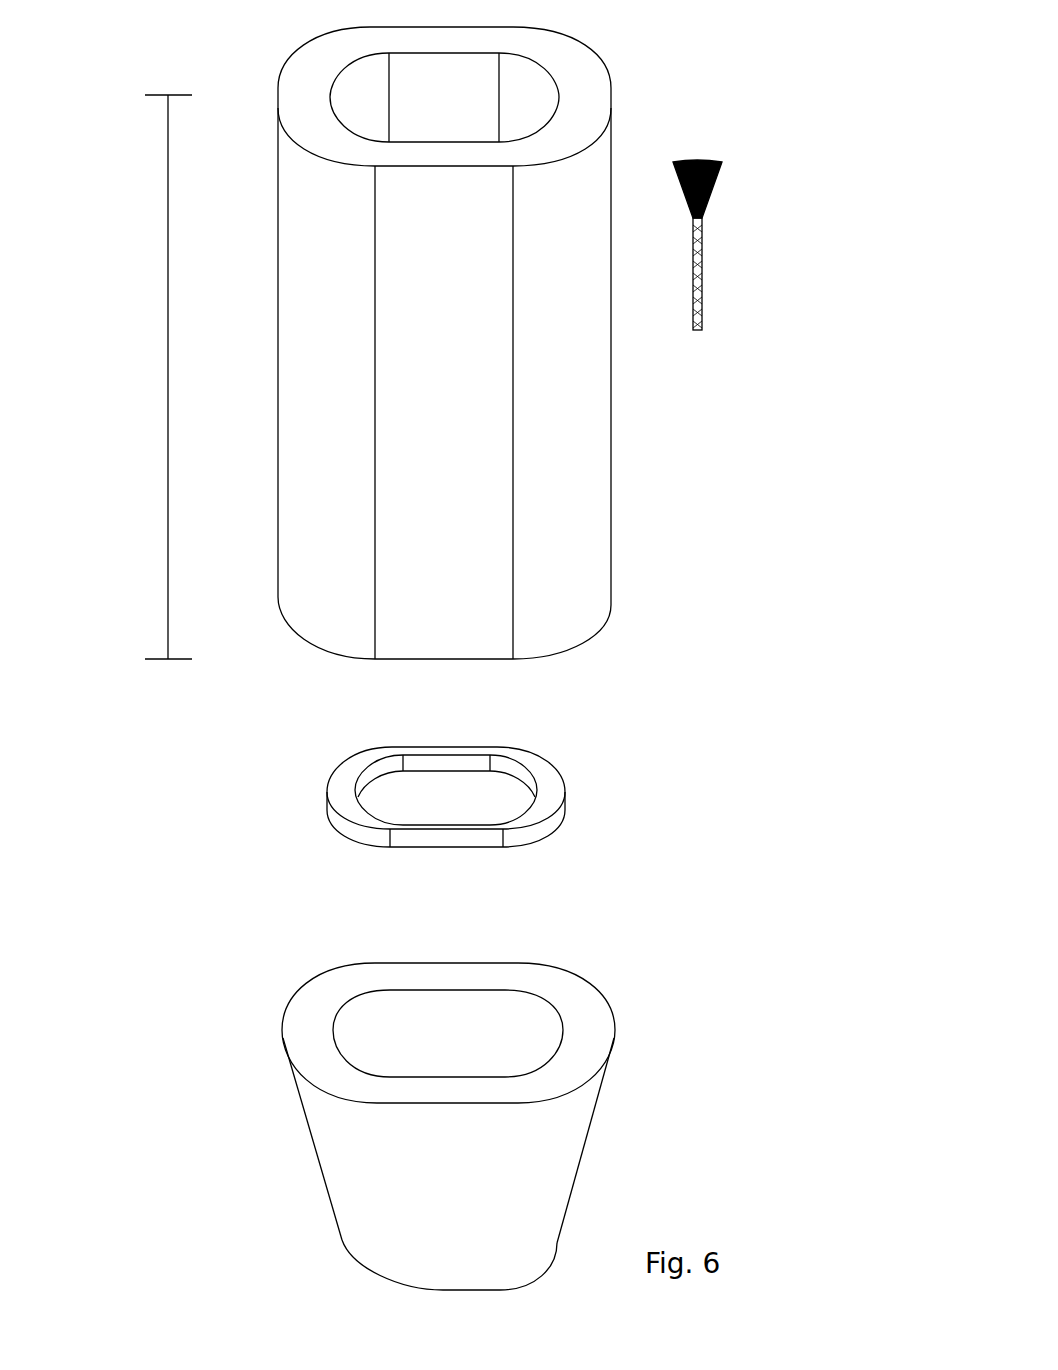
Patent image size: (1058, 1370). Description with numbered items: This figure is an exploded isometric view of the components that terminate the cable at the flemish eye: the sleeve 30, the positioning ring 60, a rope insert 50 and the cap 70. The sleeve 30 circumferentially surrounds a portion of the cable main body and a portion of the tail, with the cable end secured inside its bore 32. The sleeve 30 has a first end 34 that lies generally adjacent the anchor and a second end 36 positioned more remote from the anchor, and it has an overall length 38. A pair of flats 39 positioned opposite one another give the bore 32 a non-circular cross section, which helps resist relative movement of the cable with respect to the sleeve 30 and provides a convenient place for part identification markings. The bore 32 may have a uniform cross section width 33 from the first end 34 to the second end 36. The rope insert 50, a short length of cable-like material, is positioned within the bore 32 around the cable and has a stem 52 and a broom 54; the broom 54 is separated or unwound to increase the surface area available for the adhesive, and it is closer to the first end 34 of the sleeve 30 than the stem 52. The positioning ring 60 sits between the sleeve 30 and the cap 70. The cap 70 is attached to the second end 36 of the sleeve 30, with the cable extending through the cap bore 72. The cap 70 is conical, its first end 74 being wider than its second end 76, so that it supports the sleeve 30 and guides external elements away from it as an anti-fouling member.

The sleeve 30 is at (457, 330).
The bore 32 is at (537, 72).
The cross section width 33 is at (330, 97).
The first end 34 is at (565, 128).
The second end 36 is at (577, 639).
The length 38 is at (168, 379).
The flats 39 is at (418, 159).
The rope insert 50 is at (734, 243).
The stem 52 is at (735, 232).
The broom 54 is at (734, 187).
The positioning ring 60 is at (565, 790).
The cap 70 is at (443, 1097).
The cap bore 72 is at (344, 982).
The first end 74 is at (370, 1031).
The second end 76 is at (443, 1290).